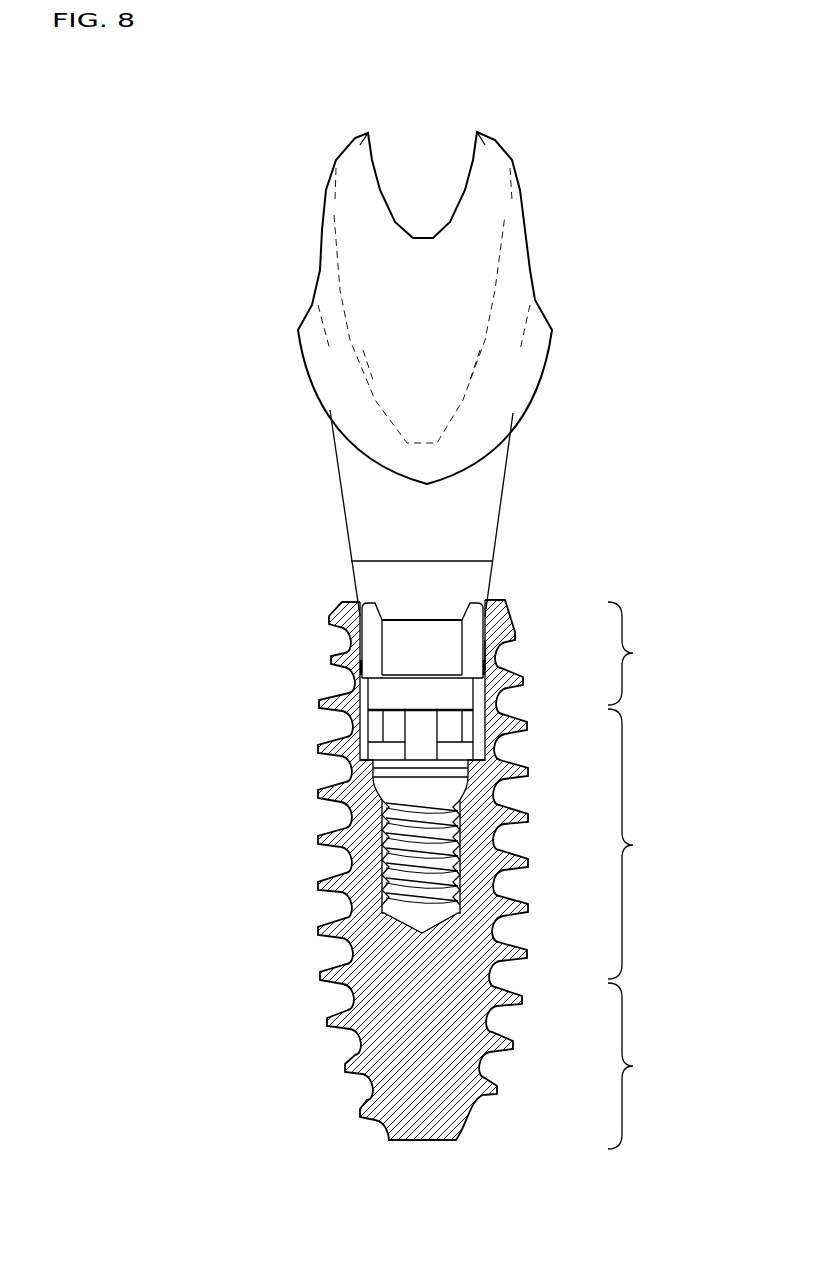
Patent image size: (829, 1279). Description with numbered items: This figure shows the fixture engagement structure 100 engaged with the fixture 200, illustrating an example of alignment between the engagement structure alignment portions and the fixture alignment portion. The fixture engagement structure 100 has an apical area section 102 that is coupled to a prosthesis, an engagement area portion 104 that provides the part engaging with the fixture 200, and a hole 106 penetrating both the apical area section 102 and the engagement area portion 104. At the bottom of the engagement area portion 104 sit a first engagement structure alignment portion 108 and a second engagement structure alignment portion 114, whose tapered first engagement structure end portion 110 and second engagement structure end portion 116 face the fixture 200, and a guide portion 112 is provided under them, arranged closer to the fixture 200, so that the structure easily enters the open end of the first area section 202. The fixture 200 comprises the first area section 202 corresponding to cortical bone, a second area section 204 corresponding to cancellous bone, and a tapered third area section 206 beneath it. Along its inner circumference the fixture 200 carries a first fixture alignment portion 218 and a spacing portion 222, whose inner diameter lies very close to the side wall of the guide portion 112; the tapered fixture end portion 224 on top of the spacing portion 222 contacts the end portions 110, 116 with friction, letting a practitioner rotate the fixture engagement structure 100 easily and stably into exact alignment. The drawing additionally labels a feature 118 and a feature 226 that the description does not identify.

The fixture engagement structure 100 is at (478, 343).
The apical area section 102 is at (357, 247).
The engagement area portion 104 is at (363, 485).
The hole 106 is at (406, 157).
The first engagement structure alignment portion 108 is at (490, 638).
The first engagement structure end portion 110 is at (448, 697).
The guide portion 112 is at (458, 735).
The second engagement structure alignment portion 114 is at (403, 655).
The second engagement structure end portion 116 is at (407, 677).
The gap between connector and fixture 118 is at (373, 633).
The fixture 200 is at (414, 863).
The first area section 202 is at (644, 653).
The second area section 204 is at (643, 844).
The third area section 206 is at (643, 1066).
The first fixture alignment portion 218 is at (422, 728).
The spacing portion 222 is at (393, 722).
The fixture end portion 224 is at (506, 652).
The internal screw thread 226 is at (433, 855).